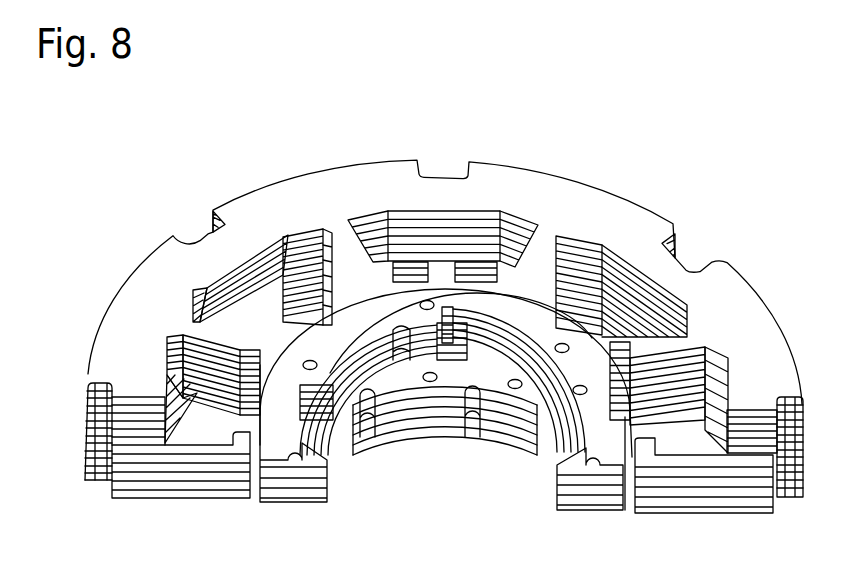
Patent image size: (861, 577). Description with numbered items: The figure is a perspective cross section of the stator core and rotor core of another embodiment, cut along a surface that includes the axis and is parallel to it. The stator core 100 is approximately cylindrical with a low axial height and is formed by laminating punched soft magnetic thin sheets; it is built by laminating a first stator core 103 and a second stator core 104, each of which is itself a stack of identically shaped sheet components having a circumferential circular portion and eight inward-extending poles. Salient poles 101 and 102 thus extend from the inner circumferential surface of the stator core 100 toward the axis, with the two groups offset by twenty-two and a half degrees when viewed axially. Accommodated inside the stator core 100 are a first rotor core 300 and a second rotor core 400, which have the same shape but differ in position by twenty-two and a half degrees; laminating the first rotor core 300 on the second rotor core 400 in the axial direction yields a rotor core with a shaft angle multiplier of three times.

The stator core 100 is at (616, 218).
The salient poles 101 is at (542, 245).
The salient poles 102 is at (700, 485).
The first stator core 103 is at (78, 383).
The second stator core 104 is at (78, 434).
The first rotor core 300 is at (485, 284).
The second rotor core 400 is at (433, 427).